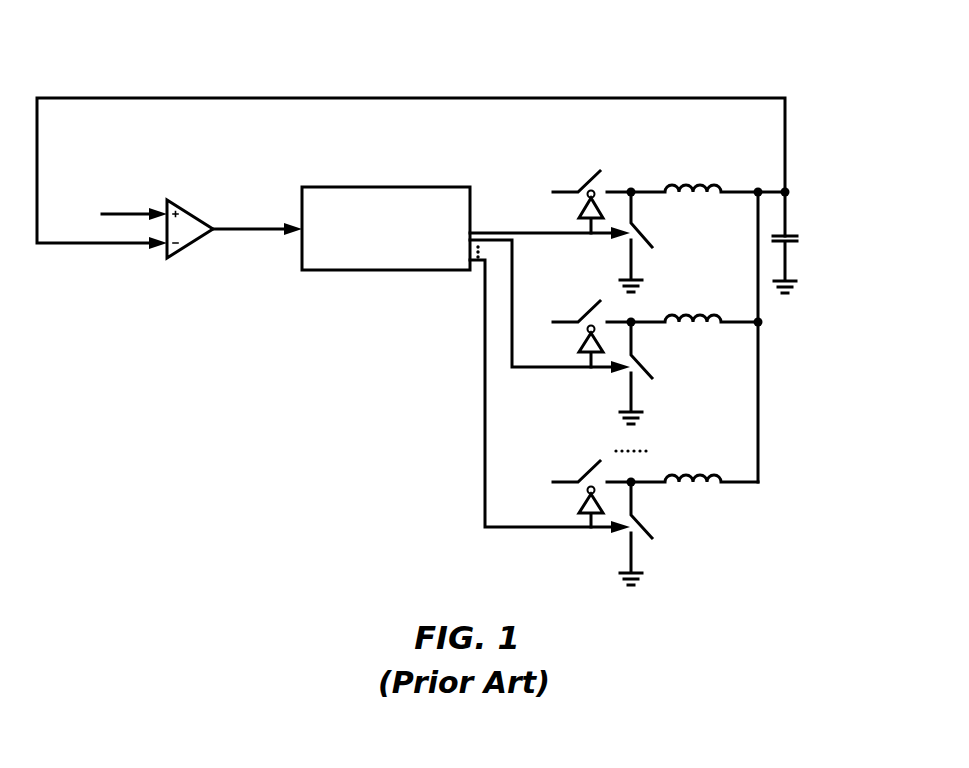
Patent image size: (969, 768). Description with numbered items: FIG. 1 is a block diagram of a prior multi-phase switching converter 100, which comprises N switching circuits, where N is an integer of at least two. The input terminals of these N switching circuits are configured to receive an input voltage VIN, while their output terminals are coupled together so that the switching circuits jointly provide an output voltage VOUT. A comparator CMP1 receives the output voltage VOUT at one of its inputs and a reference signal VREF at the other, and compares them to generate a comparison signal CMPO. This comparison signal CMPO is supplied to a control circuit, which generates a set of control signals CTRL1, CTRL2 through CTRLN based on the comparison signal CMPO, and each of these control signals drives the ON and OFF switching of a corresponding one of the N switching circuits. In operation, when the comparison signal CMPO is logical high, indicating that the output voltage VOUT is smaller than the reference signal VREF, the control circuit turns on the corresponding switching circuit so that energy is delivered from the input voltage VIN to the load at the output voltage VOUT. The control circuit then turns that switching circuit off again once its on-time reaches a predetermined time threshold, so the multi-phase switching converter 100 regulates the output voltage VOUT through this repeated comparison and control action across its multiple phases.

The multi-phase switching converter 100 is at (821, 59).
The comparator CMP1 is at (196, 232).
The comparison signal CMPO is at (257, 219).
The reference signal VREF is at (129, 202).
The control signal CTRL1 is at (550, 244).
The control signal CTRL2 is at (550, 319).
The control signal CTRLN is at (550, 413).
The input voltage VIN is at (584, 325).
The output voltage VOUT is at (808, 181).